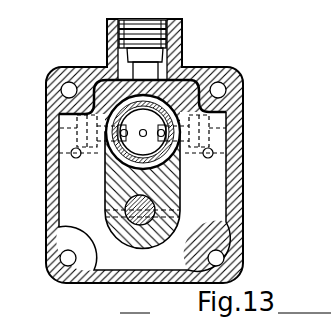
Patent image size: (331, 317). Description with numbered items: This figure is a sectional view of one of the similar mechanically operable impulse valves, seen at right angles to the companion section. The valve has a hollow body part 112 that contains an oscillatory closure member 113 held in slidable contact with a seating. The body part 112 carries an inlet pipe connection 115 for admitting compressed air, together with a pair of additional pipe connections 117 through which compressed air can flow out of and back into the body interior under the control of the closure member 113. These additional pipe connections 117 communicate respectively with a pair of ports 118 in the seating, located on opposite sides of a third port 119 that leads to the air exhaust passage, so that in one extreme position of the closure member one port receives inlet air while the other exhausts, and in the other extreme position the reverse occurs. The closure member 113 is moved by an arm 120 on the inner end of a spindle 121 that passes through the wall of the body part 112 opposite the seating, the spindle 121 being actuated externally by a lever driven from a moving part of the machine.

The hollow body part 112 is at (113, 258).
The oscillatory closure member 113 is at (163, 97).
The inlet pipe connection 115 is at (179, 26).
The additional pipe connections 117 is at (60, 123).
The pair of ports 118 is at (113, 100).
The third port 119 is at (142, 134).
The arm 120 is at (112, 212).
The spindle 121 is at (181, 224).